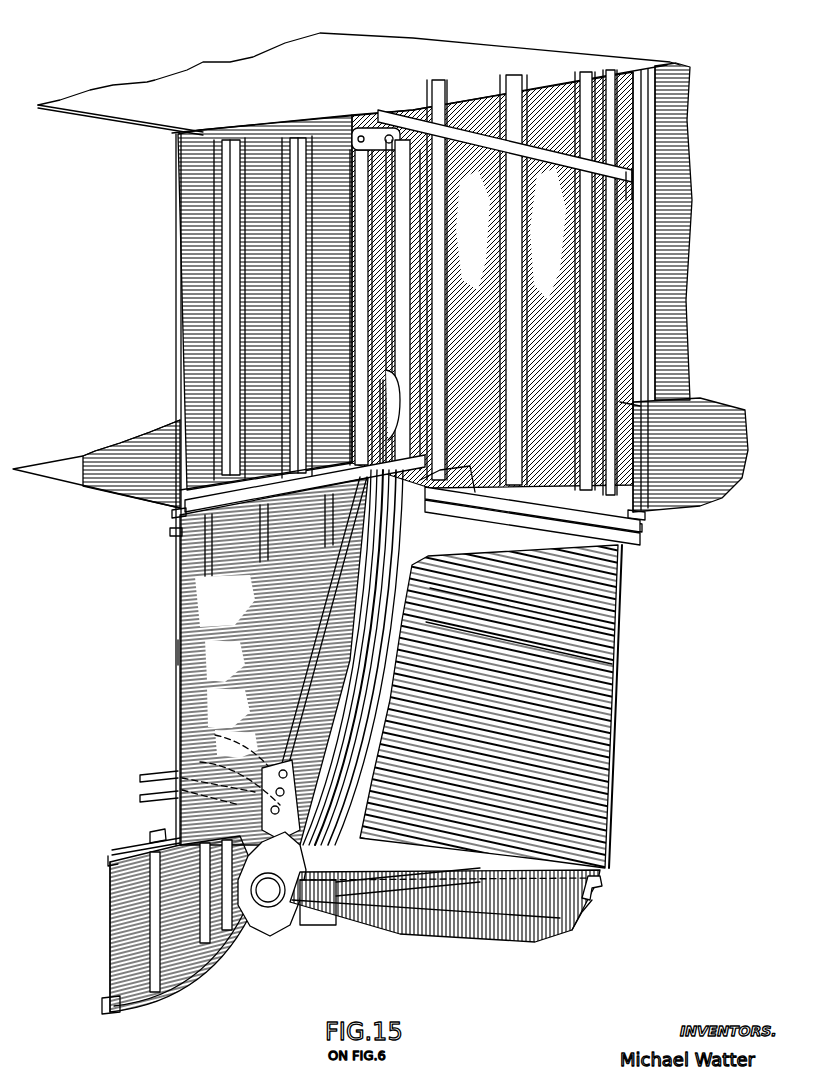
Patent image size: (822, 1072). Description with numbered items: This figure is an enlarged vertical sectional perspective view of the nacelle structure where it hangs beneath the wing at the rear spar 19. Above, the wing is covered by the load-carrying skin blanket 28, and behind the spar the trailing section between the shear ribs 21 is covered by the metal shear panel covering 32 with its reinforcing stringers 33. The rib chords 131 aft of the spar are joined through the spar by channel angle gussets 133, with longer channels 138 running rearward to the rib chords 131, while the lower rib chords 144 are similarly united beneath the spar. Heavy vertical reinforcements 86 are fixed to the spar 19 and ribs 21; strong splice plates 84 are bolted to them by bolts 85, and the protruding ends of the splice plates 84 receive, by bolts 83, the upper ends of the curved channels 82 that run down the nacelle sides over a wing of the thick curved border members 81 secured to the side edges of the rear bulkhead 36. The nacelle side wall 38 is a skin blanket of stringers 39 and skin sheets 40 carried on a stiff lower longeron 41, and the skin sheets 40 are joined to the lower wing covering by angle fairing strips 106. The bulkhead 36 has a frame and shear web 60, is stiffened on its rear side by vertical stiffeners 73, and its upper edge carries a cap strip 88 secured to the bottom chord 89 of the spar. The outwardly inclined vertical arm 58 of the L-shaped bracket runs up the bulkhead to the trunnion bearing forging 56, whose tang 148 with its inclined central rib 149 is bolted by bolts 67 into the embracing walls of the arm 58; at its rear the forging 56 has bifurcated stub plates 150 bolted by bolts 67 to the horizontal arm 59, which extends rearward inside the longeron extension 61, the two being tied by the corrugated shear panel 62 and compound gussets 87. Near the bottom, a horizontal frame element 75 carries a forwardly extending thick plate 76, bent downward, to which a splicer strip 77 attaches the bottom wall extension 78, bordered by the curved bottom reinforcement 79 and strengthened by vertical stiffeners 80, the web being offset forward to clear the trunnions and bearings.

The load-carrying skin blanket 28 is at (128, 122).
The rear spar 19 is at (680, 196).
The channel angle gusset 133 is at (346, 132).
The longer channel 138 is at (400, 112).
The rib chord 131 is at (463, 128).
The heavy vertical reinforcement 86 is at (396, 326).
The bolt 85 is at (388, 394).
The splice plate 84 is at (380, 428).
The shear rib 21 is at (640, 464).
The lower rib chord 144 is at (646, 516).
The angle fairing strip 106 is at (645, 528).
The reinforcing stringer 33 is at (628, 548).
The metal shear panel covering 32 is at (622, 580).
The stringer 39 is at (626, 612).
The skin sheet 40 is at (626, 646).
The stressed skin side wall 38 is at (640, 694).
The bottom chord 89 is at (172, 514).
The cap strip 88 is at (174, 536).
The vertical stiffener 73 is at (204, 583).
The curved channel 82 is at (376, 598).
The bolt 83 is at (382, 553).
The curved border member 81 is at (352, 658).
The rear bulkhead 36 is at (170, 657).
The frame and shear web 60 is at (185, 684).
The vertical arm 58 is at (317, 697).
The central rib 149 is at (218, 740).
The tang 148 is at (218, 762).
The bolt 67 is at (285, 774).
The lower longeron 41 is at (148, 778).
The thick plate 76 is at (140, 840).
The horizontal frame element 75 is at (162, 830).
The splicer strip 77 is at (108, 858).
The bottom wall extension 78 is at (108, 954).
The vertical stiffener 80 is at (180, 975).
The curved bottom reinforcement 79 is at (106, 1014).
The trunnion bearing forging 56 is at (275, 926).
The bifurcated stub plate 150 is at (332, 926).
The compound gusset 87 is at (380, 928).
The horizontal arm 59 is at (536, 944).
The longeron extension 61 is at (601, 884).
The shear panel 62 is at (582, 910).